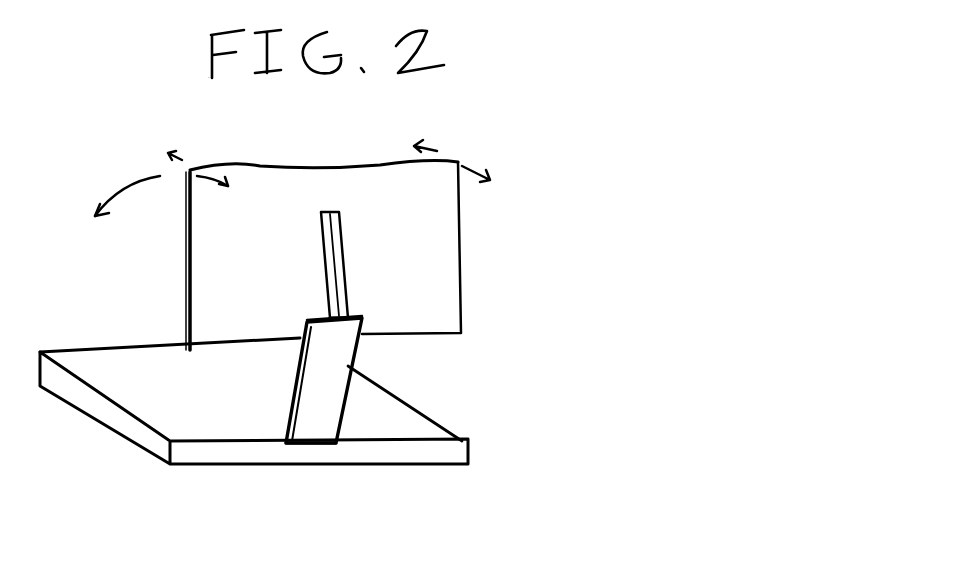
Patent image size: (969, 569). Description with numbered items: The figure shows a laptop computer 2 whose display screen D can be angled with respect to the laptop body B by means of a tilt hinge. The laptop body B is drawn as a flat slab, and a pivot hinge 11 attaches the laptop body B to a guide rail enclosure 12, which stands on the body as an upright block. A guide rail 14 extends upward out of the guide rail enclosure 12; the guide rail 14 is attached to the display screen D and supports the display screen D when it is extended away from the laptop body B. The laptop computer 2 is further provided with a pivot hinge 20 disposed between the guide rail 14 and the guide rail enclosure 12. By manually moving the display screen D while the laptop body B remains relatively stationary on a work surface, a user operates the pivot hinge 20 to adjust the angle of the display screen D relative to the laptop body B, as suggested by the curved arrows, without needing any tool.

The laptop computer 2 is at (633, 242).
The pivot hinge 11 is at (316, 444).
The guide rail enclosure 12 is at (342, 407).
The guide rail 14 is at (345, 228).
The pivot hinge 20 is at (366, 304).
The laptop body B is at (112, 434).
The display screen D is at (463, 250).